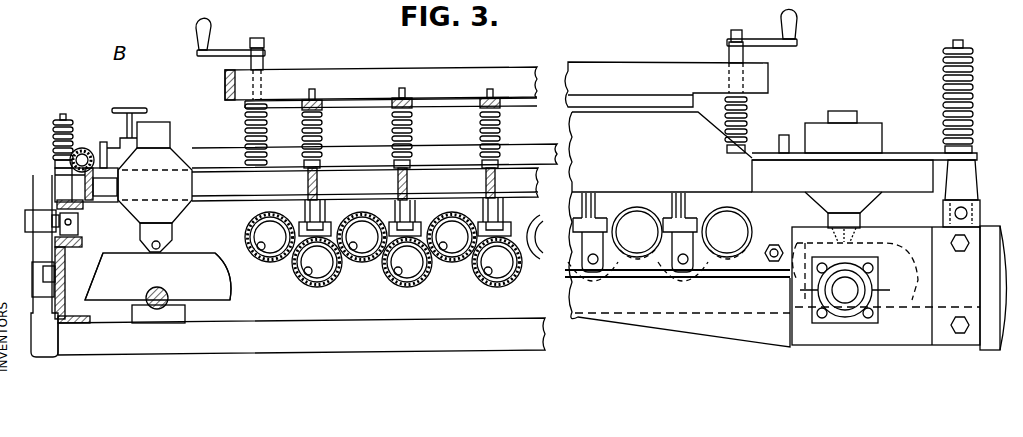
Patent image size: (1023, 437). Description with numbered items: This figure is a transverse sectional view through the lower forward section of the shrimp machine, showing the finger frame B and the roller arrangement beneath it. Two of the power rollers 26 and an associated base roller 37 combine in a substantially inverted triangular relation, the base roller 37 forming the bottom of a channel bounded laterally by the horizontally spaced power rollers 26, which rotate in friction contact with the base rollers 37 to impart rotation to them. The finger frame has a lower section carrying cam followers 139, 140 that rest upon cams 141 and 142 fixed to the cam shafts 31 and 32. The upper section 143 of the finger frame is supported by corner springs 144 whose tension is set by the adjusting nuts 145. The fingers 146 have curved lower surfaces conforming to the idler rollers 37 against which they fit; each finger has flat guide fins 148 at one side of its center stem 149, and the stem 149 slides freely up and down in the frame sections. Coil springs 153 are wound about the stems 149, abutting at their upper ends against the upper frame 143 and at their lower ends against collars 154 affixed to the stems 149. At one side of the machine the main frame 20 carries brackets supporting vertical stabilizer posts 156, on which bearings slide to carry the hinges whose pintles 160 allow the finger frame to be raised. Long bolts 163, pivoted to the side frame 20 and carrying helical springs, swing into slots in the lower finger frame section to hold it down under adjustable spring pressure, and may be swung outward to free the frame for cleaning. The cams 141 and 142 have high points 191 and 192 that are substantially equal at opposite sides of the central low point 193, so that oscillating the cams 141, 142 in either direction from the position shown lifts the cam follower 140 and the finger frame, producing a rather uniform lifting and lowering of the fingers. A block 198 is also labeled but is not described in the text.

The main frame 20 is at (82, 316).
The power rollers 26 is at (265, 263).
The cam shaft 31 is at (846, 295).
The cam shaft 32 is at (163, 310).
The base roller 37 is at (315, 288).
The cam follower 139 is at (868, 227).
The cam follower 140 is at (166, 247).
The cam 141 is at (899, 288).
The cam 142 is at (140, 288).
The upper section of the finger frame 143 is at (618, 78).
The corner springs 144 is at (748, 118).
The adjusting nuts 145 is at (797, 43).
The fingers 146 is at (470, 190).
The guide fins 148 is at (310, 198).
The center stem 149 is at (490, 89).
The coil springs 153 is at (392, 133).
The collars 154 is at (392, 163).
The vertical stabilizer posts 156 is at (35, 249).
The hinge pintles 160 is at (60, 176).
The long bolts 163 is at (63, 114).
The high point 191 is at (100, 256).
The high point 192 is at (217, 254).
The central low point 193 is at (156, 252).
The housing block 198 is at (884, 173).